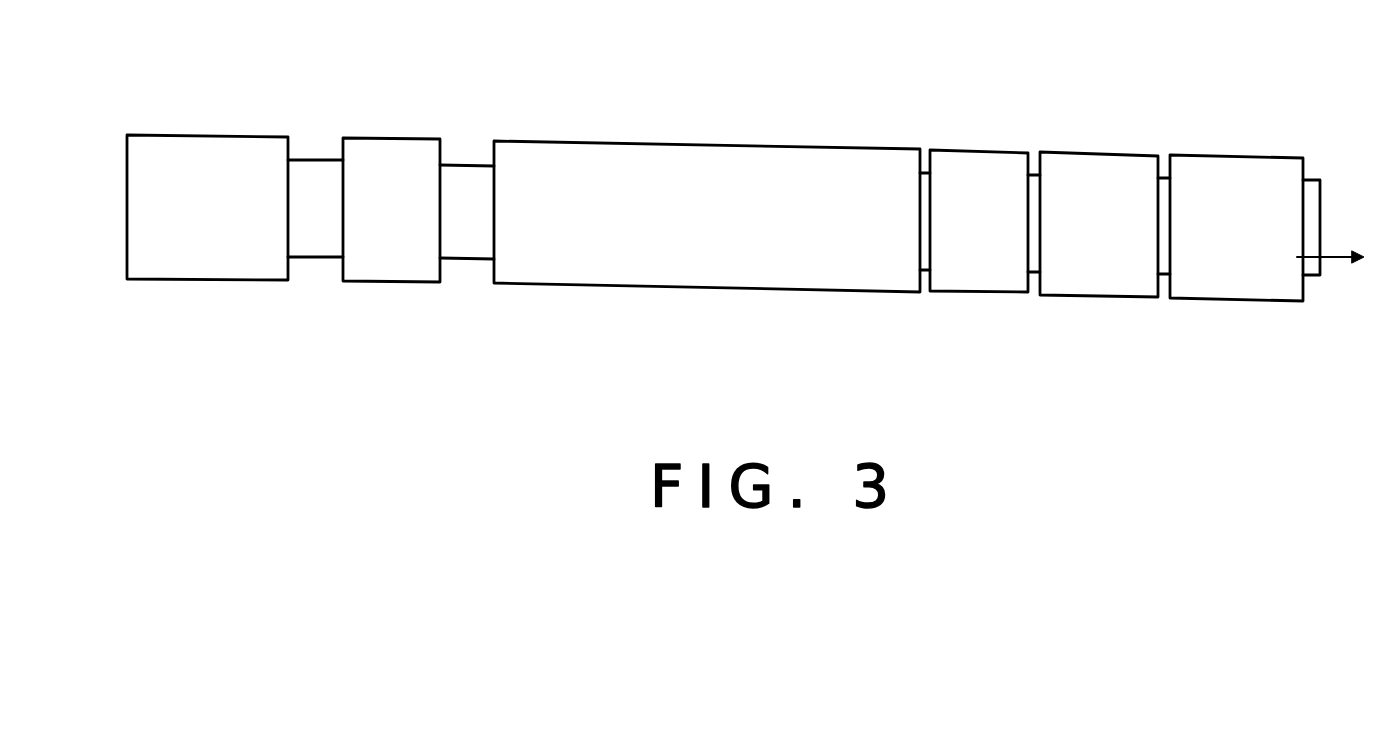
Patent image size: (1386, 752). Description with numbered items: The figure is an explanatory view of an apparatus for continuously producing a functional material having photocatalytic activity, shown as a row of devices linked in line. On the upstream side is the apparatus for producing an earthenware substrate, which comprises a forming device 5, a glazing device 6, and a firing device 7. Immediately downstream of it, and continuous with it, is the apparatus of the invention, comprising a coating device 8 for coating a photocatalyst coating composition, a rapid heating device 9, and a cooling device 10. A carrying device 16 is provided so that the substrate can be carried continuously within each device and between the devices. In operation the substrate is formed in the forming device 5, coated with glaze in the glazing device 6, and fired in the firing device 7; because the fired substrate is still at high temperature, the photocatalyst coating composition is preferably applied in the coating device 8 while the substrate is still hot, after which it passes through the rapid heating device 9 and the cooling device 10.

The forming device 5 is at (237, 157).
The glazing device 6 is at (398, 160).
The firing device 7 is at (722, 168).
The coating device 8 is at (977, 167).
The rapid heating device 9 is at (1098, 173).
The cooling device 10 is at (1228, 178).
The carrying device 16 is at (313, 260).